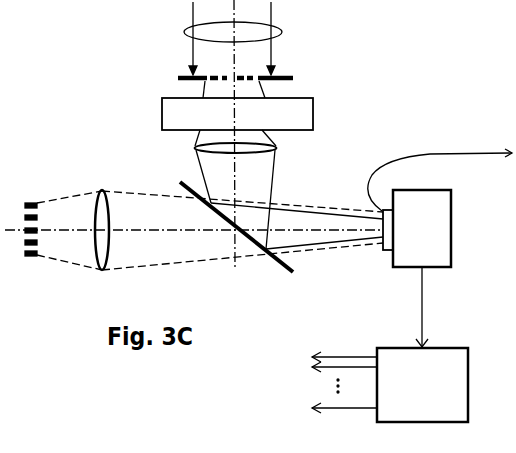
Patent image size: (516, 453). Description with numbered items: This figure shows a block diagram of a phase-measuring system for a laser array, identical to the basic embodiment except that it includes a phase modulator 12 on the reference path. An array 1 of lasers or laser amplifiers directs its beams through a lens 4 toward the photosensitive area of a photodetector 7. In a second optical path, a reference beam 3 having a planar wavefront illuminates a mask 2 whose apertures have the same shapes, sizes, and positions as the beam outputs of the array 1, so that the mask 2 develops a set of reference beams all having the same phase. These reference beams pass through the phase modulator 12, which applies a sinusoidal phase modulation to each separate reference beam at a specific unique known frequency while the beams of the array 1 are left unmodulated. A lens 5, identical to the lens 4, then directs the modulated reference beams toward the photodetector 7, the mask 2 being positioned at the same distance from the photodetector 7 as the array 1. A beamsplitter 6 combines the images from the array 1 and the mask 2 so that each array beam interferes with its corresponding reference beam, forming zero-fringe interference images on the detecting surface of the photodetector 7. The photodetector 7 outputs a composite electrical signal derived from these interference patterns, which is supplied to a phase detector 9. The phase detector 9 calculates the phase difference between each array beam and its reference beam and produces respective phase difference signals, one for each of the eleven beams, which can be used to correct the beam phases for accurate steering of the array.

The array 1 is at (28, 213).
The mask 2 is at (225, 79).
The reference beam 3 is at (239, 38).
The lens 4 is at (102, 212).
The lens 5 is at (247, 146).
The beamsplitter 6 is at (240, 242).
The photodetector 7 is at (440, 208).
The phase detector 9 is at (376, 385).
The phase modulator 12 is at (237, 114).